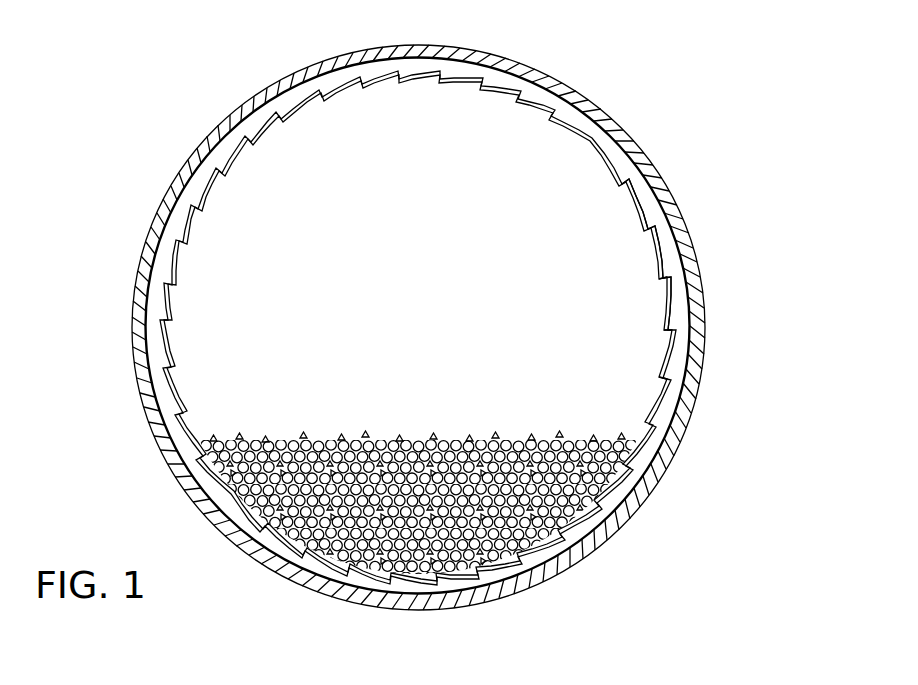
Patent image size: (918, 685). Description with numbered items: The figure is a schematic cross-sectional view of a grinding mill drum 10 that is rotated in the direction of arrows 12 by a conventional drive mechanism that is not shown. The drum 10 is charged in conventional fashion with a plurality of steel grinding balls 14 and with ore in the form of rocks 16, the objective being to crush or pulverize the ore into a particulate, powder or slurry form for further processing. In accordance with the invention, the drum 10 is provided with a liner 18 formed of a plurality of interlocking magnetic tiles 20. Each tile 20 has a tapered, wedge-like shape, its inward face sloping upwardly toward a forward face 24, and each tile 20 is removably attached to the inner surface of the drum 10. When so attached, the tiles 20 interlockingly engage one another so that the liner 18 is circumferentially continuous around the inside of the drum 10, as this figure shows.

The grinding mill drum 10 is at (698, 272).
The arrows 12 is at (358, 22).
The steel grinding balls 14 is at (328, 438).
The rocks 16 is at (413, 438).
The liner 18 is at (583, 112).
The interlocking magnetic tiles 20 is at (637, 193).
The forward face 24 is at (668, 272).